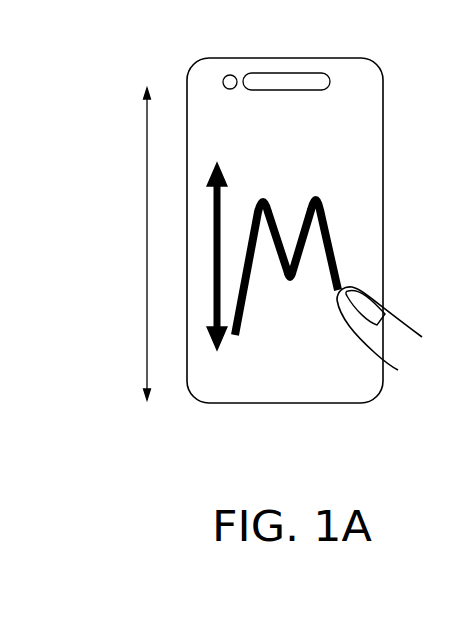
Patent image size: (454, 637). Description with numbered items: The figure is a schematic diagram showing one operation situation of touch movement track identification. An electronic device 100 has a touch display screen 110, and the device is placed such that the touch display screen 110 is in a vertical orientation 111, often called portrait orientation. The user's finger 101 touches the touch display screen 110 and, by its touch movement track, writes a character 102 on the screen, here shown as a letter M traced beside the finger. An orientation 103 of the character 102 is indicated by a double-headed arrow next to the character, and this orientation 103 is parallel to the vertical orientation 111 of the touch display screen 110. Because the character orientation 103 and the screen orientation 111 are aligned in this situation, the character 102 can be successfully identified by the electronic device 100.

The electronic device 100 is at (335, 58).
The touch display screen 110 is at (349, 118).
The user's finger 101 is at (393, 323).
The character 102 is at (336, 232).
The orientation of the character 103 is at (213, 305).
The vertical orientation 111 is at (147, 146).